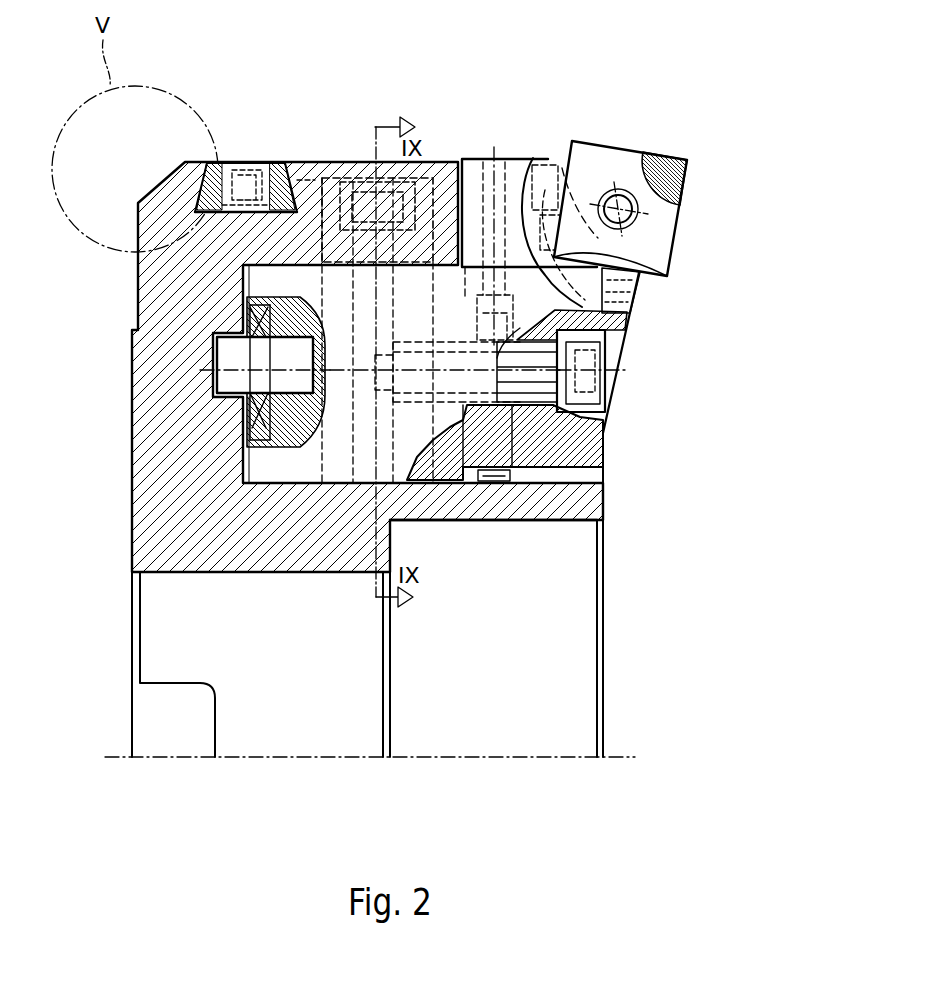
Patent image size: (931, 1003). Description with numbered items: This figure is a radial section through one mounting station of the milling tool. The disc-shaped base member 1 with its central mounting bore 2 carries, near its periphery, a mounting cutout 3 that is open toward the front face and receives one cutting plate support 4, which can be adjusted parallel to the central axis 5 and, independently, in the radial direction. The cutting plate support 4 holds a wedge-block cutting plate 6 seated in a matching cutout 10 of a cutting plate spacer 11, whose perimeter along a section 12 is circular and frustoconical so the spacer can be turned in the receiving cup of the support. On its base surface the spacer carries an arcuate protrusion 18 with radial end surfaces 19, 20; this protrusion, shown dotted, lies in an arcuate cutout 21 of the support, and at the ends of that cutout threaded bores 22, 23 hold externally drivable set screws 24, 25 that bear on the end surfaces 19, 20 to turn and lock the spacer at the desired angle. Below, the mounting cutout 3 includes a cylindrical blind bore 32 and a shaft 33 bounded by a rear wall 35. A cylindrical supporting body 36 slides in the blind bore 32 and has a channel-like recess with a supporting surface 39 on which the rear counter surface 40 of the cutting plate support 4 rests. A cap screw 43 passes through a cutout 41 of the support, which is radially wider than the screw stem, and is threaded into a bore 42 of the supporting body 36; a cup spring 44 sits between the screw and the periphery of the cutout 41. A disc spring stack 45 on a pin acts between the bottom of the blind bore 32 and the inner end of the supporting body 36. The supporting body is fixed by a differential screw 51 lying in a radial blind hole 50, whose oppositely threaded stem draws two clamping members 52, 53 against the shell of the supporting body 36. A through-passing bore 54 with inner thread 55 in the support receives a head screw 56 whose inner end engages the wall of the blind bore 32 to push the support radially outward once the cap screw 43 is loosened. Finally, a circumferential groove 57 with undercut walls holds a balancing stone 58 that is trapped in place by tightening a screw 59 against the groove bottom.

The base member 1 is at (165, 387).
The mounting bore 2 is at (573, 718).
The mounting cutout 3 is at (400, 178).
The cutting plate support 4 is at (515, 167).
The central axis 5 is at (357, 757).
The cutting plate 6 is at (613, 158).
The cutout 10 is at (597, 165).
The cutting plate spacer 11 is at (562, 168).
The section of the perimeter 12 is at (637, 278).
The protrusion 18 is at (600, 210).
The end surface 19 is at (625, 358).
The end surface 20 is at (575, 235).
The arcuate cutout 21 is at (640, 378).
The threaded bore 22 is at (635, 312).
The threaded bore 23 is at (527, 200).
The set screw 24 is at (637, 298).
The set screw 25 is at (541, 160).
The blind bore 32 is at (278, 485).
The shaft 33 is at (457, 230).
The rear wall 35 is at (348, 172).
The supporting body 36 is at (607, 458).
The supporting surface 39 is at (478, 520).
The rear counter surface 40 is at (607, 508).
The cutout 41 is at (607, 437).
The bore 42 is at (445, 520).
The cap screw 43 is at (622, 385).
The cup spring 44 is at (613, 405).
The disc spring stack 45 is at (243, 412).
The blind hole 50 is at (307, 187).
The differential screw 51 is at (333, 178).
The clamping member 52 is at (330, 290).
The clamping member 53 is at (335, 483).
The through-passing bore 54 is at (487, 162).
The inner thread 55 is at (510, 520).
The head screw 56 is at (475, 520).
The groove 57 is at (243, 232).
The balancing stone 58 is at (183, 162).
The screw 59 is at (247, 167).